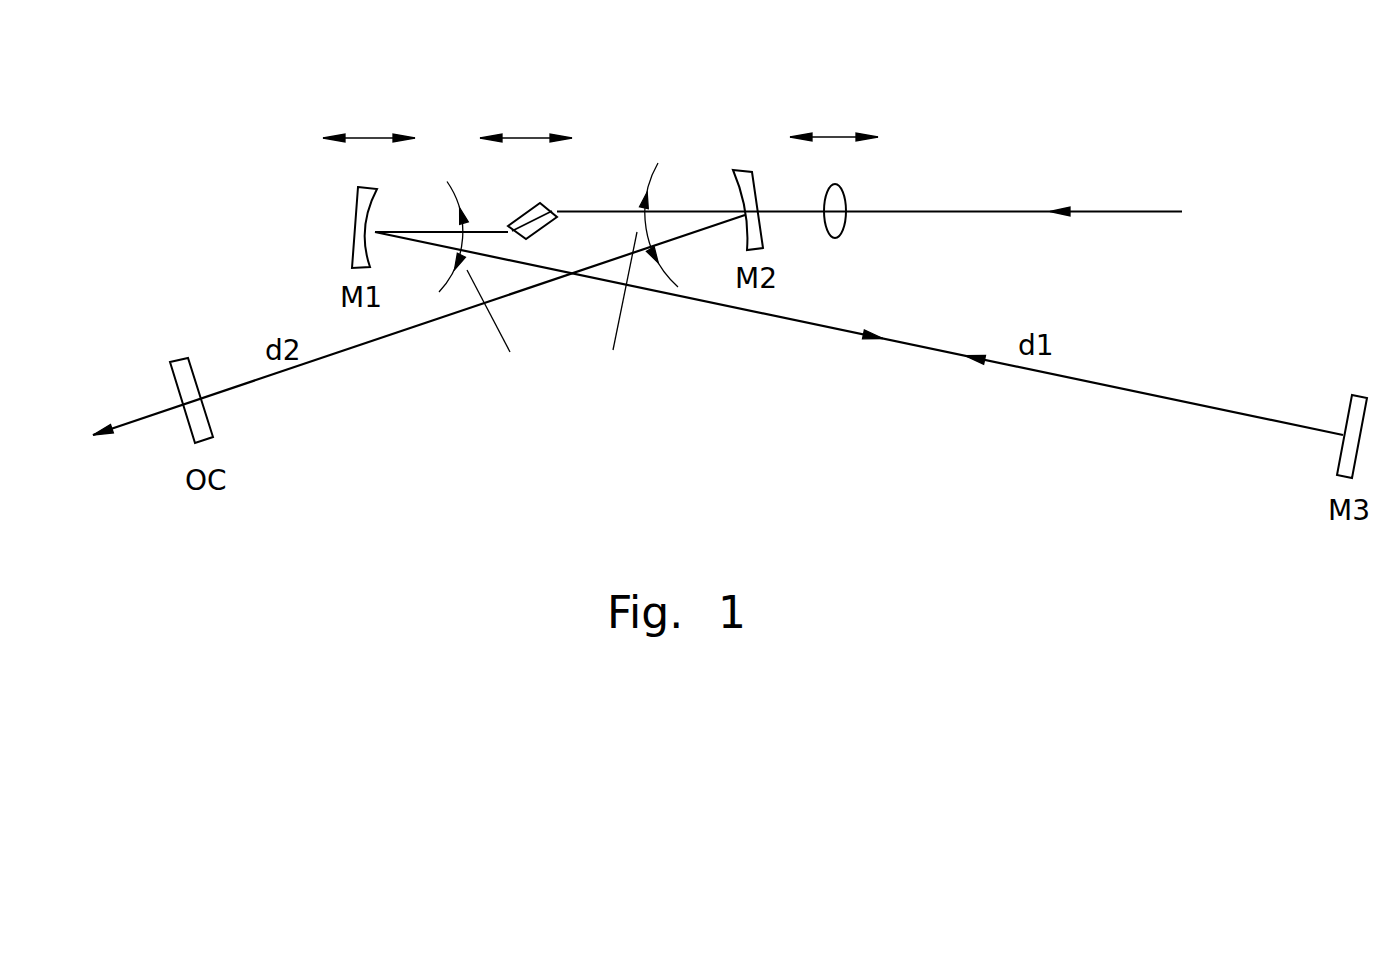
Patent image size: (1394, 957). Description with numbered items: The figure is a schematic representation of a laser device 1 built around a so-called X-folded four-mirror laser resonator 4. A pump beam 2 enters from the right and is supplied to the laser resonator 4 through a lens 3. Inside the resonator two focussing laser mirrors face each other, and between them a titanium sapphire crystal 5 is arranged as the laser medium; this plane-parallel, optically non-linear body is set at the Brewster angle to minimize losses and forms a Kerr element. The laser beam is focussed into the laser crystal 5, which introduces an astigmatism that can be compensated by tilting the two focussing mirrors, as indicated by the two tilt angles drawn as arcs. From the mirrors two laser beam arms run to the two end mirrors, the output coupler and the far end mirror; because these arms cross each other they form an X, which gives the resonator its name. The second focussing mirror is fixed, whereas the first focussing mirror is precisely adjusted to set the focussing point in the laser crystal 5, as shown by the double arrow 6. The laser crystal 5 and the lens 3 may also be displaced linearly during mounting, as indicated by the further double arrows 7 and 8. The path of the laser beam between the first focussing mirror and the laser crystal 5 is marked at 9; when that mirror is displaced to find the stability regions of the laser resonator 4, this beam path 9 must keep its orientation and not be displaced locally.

The laser device 1 is at (717, 237).
The pump beam 2 is at (920, 196).
The lens 3 is at (850, 193).
The X-folded laser resonator 4 is at (558, 209).
The Ti:S crystal 5 is at (542, 210).
The double arrow 6 is at (369, 118).
The double arrow 7 is at (526, 118).
The double arrow 8 is at (834, 117).
The path of the laser beam 9 is at (453, 235).